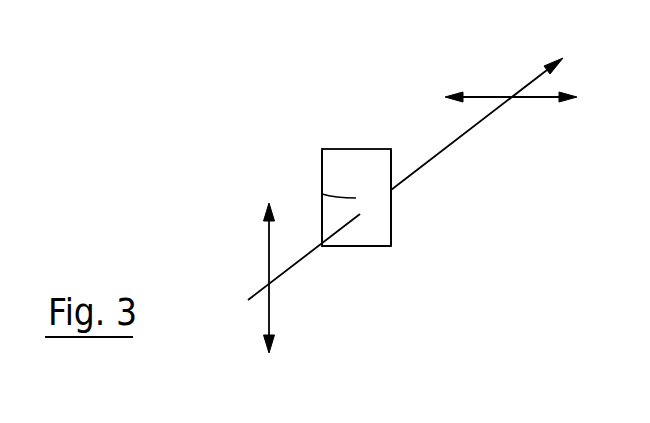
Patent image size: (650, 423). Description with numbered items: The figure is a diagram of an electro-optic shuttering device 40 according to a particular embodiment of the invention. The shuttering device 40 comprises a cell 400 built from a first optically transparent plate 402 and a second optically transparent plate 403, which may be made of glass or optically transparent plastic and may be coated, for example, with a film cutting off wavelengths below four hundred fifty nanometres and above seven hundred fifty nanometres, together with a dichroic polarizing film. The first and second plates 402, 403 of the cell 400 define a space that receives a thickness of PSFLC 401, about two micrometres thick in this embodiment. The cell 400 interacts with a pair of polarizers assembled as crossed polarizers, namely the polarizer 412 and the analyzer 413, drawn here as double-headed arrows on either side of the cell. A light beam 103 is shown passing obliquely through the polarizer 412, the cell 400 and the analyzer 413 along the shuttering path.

The electro-optic shuttering device 40 is at (344, 103).
The light beam 103 is at (416, 150).
The cell 400 is at (358, 246).
The thickness of PSFLC 401 is at (322, 194).
The first optically transparent plate 402 is at (322, 197).
The second optically transparent plate 403 is at (391, 202).
The polarizer 412 is at (271, 307).
The analyzer 413 is at (532, 98).